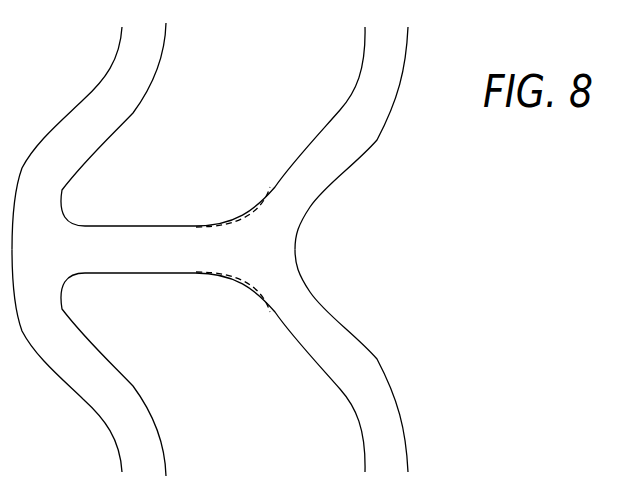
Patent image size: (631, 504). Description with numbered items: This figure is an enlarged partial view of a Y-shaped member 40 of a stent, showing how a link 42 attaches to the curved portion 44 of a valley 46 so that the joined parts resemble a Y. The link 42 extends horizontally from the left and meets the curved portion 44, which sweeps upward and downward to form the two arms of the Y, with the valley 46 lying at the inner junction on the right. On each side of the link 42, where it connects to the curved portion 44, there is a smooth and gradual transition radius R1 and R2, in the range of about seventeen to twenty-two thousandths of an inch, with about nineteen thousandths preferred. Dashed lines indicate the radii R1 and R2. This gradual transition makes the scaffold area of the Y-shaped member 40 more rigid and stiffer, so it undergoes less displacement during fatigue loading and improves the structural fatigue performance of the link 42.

The Y-shaped member 40 is at (252, 249).
The link 42 is at (122, 227).
The curved portion 44 is at (280, 164).
The valley 46 is at (295, 248).
The transition radius R1 is at (231, 212).
The transition radius R2 is at (231, 287).